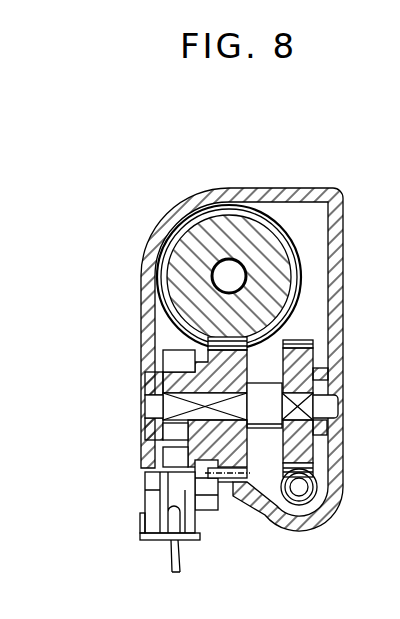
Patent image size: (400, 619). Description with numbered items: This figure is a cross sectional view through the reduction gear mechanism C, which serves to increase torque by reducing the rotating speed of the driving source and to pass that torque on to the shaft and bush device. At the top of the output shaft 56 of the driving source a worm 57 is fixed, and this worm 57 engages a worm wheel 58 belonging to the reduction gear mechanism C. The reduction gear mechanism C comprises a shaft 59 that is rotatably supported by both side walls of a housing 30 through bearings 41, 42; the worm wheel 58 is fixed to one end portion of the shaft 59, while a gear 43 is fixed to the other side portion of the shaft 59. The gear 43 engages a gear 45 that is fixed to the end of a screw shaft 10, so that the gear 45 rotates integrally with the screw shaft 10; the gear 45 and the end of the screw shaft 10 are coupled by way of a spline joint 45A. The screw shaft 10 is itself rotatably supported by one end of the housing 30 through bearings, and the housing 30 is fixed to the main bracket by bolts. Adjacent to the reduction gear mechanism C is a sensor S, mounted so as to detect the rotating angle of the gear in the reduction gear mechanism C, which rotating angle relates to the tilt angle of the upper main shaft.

The reduction gear mechanism C is at (178, 198).
The sensor S is at (142, 487).
The screw shaft 10 is at (241, 277).
The housing 30 is at (337, 278).
The bearing 41 is at (340, 381).
The bearing 42 is at (152, 392).
The gear 43 is at (204, 338).
The gear 45 is at (172, 228).
The spline joint 45A is at (386, 167).
The output shaft 56 is at (303, 492).
The worm 57 is at (286, 498).
The worm wheel 58 is at (278, 447).
The shaft 59 is at (150, 405).